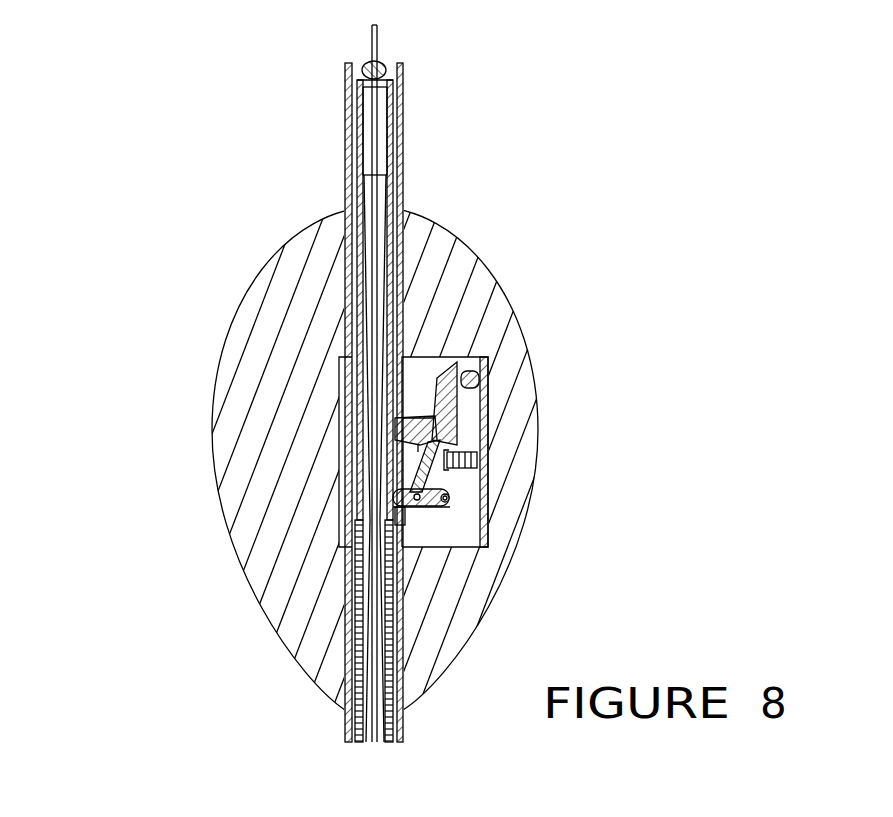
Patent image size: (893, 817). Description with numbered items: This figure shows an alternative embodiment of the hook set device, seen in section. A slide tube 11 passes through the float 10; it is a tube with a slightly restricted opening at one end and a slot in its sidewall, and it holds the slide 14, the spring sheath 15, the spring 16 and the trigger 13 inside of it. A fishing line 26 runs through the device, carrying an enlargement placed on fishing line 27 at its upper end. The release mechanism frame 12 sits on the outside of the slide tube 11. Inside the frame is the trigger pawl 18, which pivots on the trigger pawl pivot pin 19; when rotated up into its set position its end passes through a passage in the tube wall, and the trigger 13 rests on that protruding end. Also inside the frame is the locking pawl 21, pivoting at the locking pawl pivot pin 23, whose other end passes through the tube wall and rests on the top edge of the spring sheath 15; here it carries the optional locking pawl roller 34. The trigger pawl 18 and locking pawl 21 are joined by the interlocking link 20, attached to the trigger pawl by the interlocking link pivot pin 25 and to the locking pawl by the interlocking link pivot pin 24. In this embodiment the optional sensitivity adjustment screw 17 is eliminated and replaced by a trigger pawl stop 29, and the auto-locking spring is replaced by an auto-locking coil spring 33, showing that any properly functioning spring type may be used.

The float 10 is at (250, 308).
The slide tube 11 is at (350, 170).
The release mechanism frame 12 is at (337, 363).
The trigger 13 is at (360, 388).
The slide 14 is at (365, 450).
The spring sheath 15 is at (357, 517).
The spring 16 is at (357, 567).
The optional sensitivity adjustment screw 17 is at (505, 372).
The trigger pawl 18 is at (455, 392).
The trigger pawl pivot pin 19 is at (432, 421).
The interlocking link 20 is at (440, 476).
The locking pawl 21 is at (624, 532).
The locking pawl pivot pin 23 is at (447, 500).
The interlocking link pivot pin 24 is at (543, 545).
The interlocking link pivot pin 25 is at (418, 448).
The fishing line 26 is at (372, 52).
The enlargement placed on fishing line 27 is at (439, 53).
The trigger pawl stop 29 is at (576, 345).
The auto-locking coil spring 33 is at (445, 478).
The locking pawl roller 34 is at (400, 506).